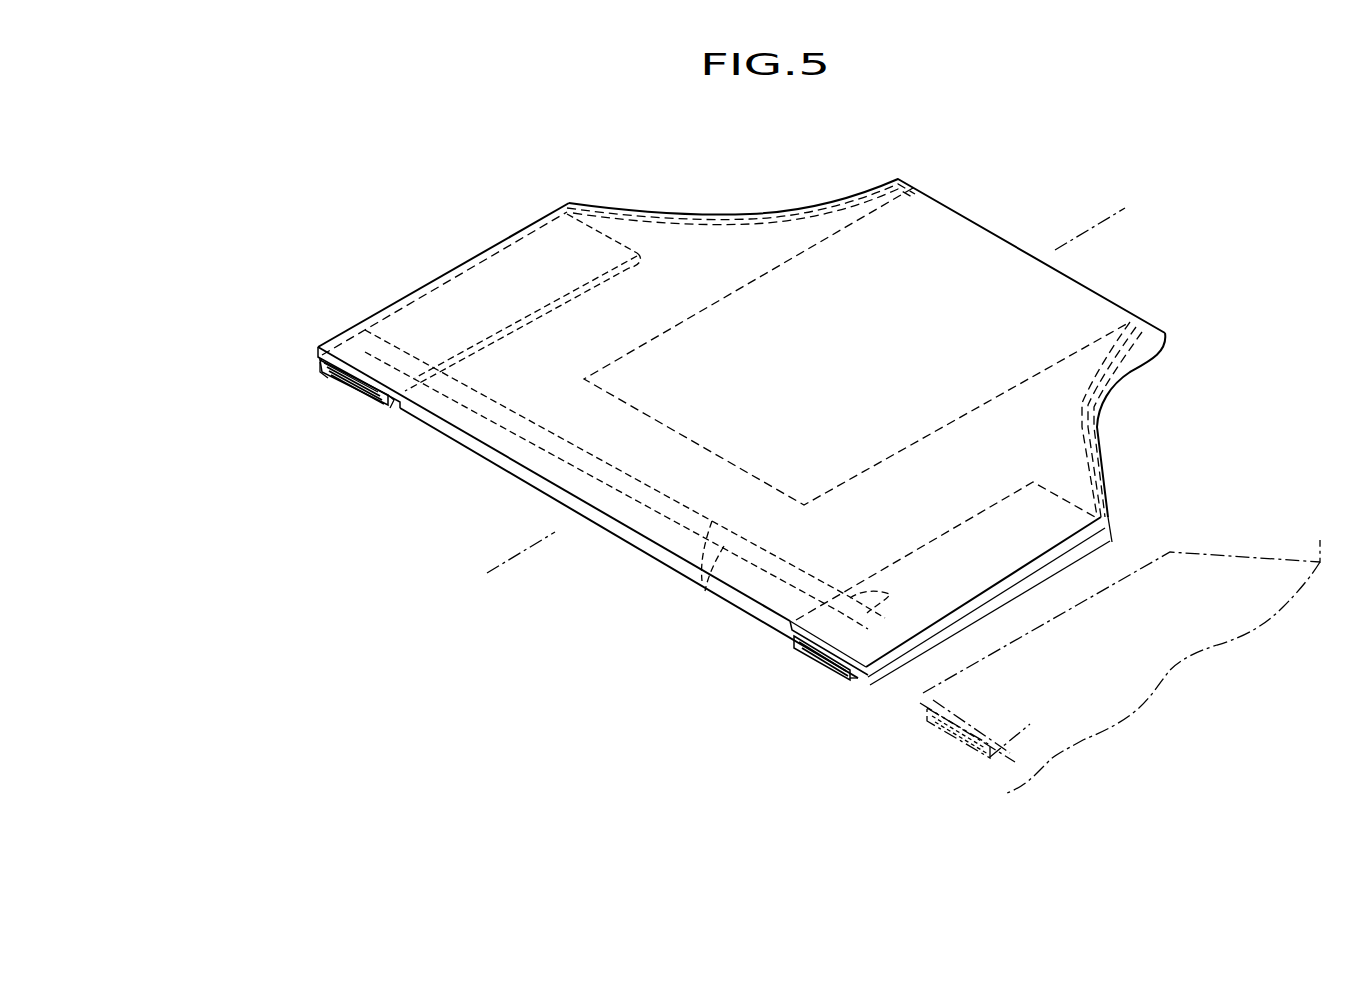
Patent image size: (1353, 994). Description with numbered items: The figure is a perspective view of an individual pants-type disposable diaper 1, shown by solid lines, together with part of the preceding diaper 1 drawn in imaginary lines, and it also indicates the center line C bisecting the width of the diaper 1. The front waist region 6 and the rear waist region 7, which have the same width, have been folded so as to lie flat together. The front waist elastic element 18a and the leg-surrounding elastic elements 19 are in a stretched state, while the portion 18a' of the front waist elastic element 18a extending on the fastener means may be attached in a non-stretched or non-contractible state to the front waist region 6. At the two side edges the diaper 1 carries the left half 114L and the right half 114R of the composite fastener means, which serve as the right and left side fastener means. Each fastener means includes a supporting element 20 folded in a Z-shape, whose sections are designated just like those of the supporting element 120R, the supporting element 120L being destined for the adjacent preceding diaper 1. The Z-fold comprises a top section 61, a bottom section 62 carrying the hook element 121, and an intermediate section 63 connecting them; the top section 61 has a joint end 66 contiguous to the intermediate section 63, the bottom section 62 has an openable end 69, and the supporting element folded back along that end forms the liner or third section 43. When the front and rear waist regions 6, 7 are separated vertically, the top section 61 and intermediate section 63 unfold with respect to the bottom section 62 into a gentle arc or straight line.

The pants-type disposable diaper 1 is at (465, 167).
The front waist region 6 is at (525, 452).
The rear waist region 7 is at (610, 516).
The leg-surrounding elastic elements 19 is at (712, 221).
The front waist elastic element 18a is at (625, 488).
The portion of the front waist elastic element 18a' is at (675, 416).
The supporting element 20 is at (1108, 547).
The supporting element (right half) 120R is at (322, 367).
The supporting element (left half) 120L is at (1120, 655).
The right half of composite fastener means 114R is at (318, 362).
The left half of composite fastener means 114L is at (863, 677).
The hook element 121 is at (355, 400).
The third section 43 is at (330, 372).
The top section 61 is at (348, 360).
The bottom section 62 is at (367, 405).
The intermediate section 63 is at (350, 395).
The joint end 66 is at (393, 403).
The openable end 69 is at (387, 405).
The center line C is at (512, 558).